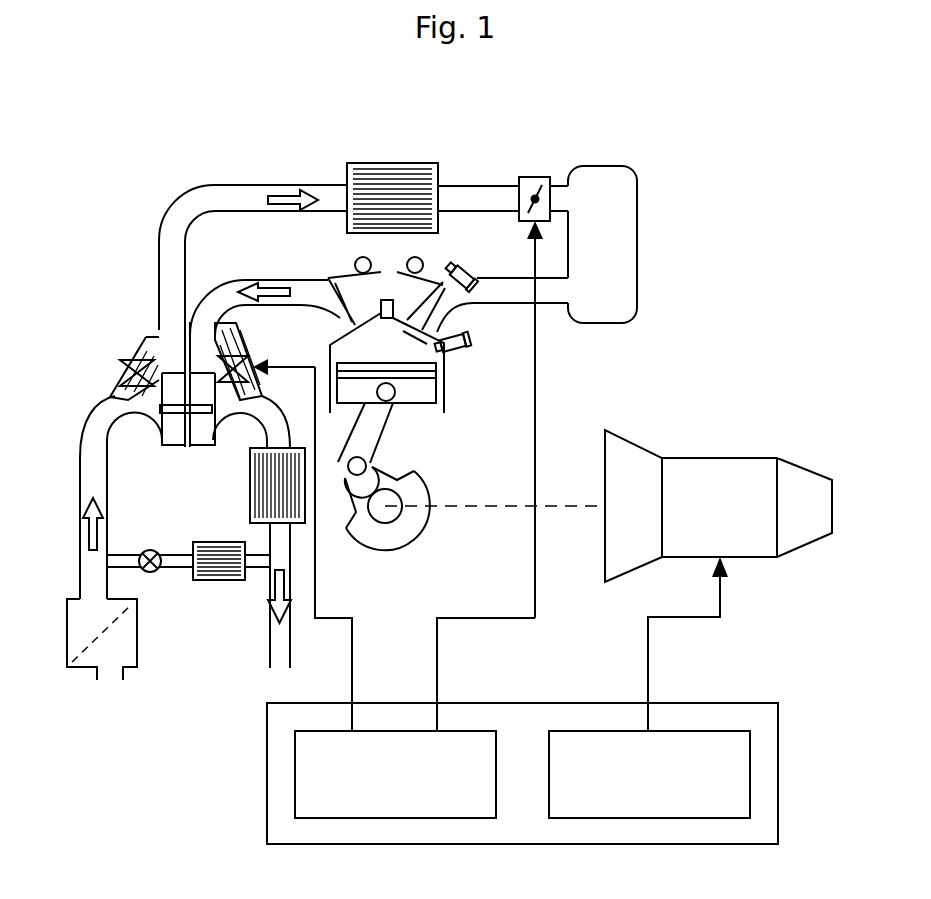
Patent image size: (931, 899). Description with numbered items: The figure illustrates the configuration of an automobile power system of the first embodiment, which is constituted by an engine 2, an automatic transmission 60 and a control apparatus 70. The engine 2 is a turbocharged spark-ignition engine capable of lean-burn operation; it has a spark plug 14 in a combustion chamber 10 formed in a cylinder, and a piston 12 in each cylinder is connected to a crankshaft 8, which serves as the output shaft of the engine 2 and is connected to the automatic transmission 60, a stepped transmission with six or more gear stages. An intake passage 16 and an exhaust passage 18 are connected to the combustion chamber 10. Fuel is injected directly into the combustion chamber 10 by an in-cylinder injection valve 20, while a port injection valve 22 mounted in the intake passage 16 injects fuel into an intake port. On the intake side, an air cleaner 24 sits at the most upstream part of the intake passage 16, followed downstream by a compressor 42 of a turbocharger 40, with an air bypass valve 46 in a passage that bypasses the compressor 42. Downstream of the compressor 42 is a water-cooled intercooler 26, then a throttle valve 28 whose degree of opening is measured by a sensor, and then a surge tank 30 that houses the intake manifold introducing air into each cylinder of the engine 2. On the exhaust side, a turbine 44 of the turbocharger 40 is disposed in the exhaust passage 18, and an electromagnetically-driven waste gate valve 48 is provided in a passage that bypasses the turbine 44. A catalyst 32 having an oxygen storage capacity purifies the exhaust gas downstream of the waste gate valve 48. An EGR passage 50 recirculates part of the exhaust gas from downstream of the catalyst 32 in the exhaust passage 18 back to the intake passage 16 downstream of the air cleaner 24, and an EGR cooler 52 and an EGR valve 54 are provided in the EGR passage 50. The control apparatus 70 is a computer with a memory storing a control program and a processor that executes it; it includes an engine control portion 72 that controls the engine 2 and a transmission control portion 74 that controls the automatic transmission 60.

The engine 2 is at (322, 158).
The crankshaft 8 is at (410, 533).
The combustion chamber 10 is at (405, 352).
The piston 12 is at (415, 403).
The spark plug 14 is at (387, 300).
The intake passage 16 is at (472, 186).
The exhaust passage 18 is at (243, 280).
The in-cylinder injection valve 20 is at (455, 350).
The port injection valve 22 is at (466, 265).
The air cleaner 24 is at (83, 667).
The water-cooled intercooler 26 is at (372, 163).
The throttle valve 28 is at (533, 177).
The surge tank 30 is at (637, 242).
The catalyst 32 is at (250, 486).
The turbocharger 40 is at (220, 493).
The compressor 42 is at (160, 447).
The turbine 44 is at (193, 447).
The air bypass valve 46 is at (130, 358).
The waste gate valve 48 is at (240, 358).
The EGR passage 50 is at (175, 567).
The EGR cooler 52 is at (218, 580).
The EGR valve 54 is at (150, 572).
The automatic transmission 60 is at (705, 452).
The control apparatus 70 is at (502, 703).
The engine control portion 72 is at (393, 731).
The transmission control portion 74 is at (597, 731).